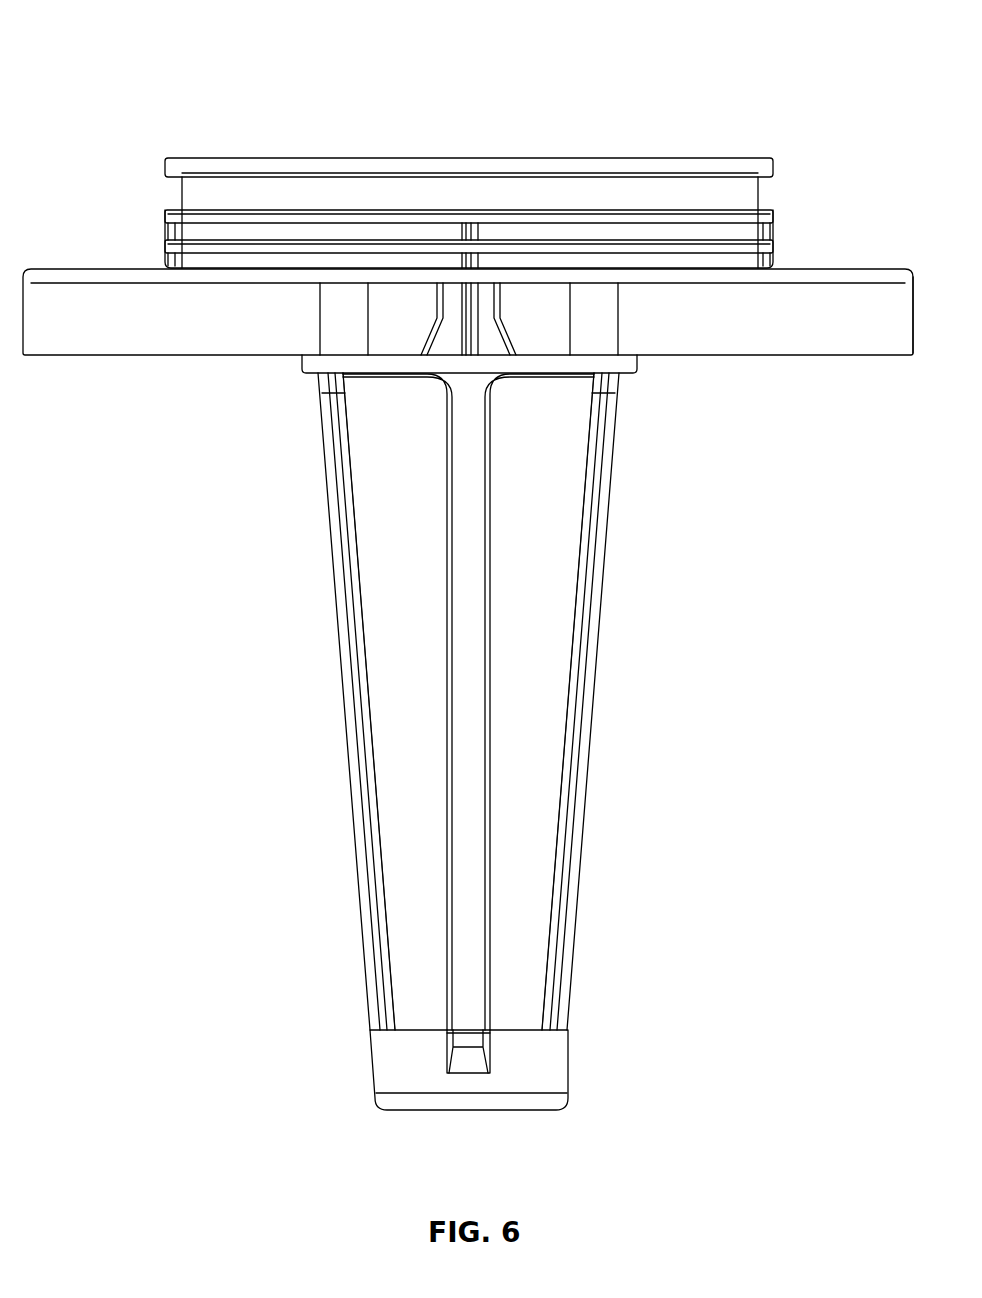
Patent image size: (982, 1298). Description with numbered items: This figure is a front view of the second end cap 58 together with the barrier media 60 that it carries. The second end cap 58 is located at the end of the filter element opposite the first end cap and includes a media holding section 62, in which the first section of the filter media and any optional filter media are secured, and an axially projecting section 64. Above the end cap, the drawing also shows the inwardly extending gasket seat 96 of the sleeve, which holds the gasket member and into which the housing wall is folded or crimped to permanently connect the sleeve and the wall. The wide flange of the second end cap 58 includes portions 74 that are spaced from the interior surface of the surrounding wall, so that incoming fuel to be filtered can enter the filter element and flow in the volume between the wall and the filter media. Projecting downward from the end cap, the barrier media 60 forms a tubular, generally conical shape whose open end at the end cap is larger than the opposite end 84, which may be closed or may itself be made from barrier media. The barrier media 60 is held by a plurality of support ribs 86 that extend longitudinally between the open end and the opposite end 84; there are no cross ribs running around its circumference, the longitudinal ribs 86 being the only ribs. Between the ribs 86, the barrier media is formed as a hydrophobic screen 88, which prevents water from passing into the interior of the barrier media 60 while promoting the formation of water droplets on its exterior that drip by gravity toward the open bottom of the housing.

The second end cap 58 is at (786, 38).
The barrier media 60 is at (301, 800).
The media holding section 62 is at (83, 269).
The axially projecting section 64 is at (780, 210).
The portions spaced from the interior surface 74 is at (915, 312).
The opposite end 84 is at (473, 1110).
The support ribs 86 is at (333, 598).
The hydrophobic screen 88 is at (546, 860).
The gasket seat 96 is at (765, 190).